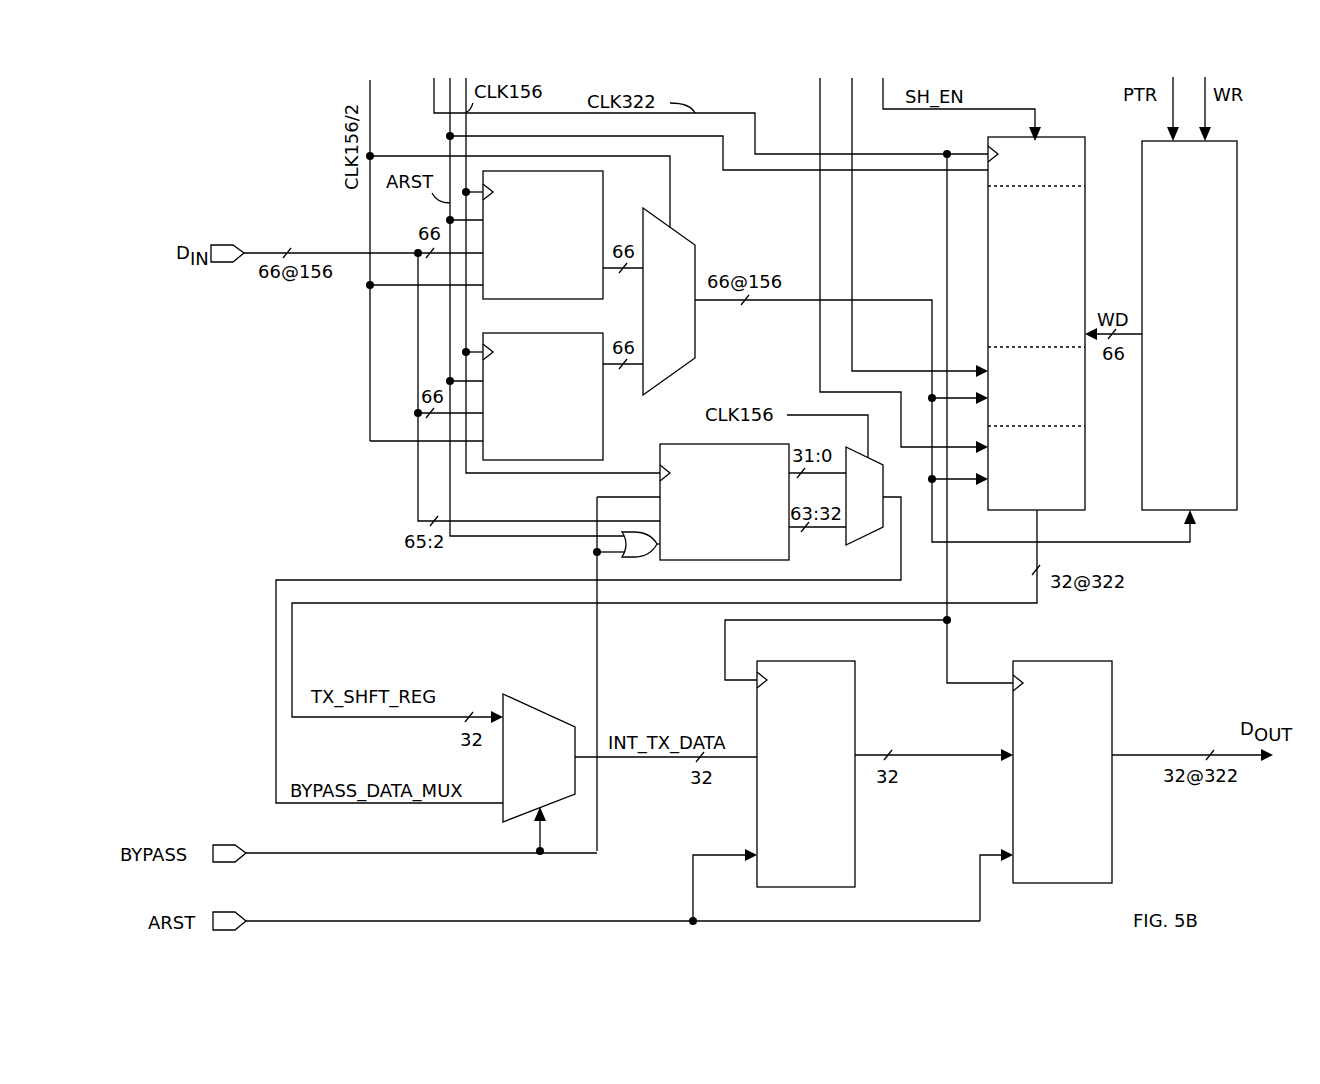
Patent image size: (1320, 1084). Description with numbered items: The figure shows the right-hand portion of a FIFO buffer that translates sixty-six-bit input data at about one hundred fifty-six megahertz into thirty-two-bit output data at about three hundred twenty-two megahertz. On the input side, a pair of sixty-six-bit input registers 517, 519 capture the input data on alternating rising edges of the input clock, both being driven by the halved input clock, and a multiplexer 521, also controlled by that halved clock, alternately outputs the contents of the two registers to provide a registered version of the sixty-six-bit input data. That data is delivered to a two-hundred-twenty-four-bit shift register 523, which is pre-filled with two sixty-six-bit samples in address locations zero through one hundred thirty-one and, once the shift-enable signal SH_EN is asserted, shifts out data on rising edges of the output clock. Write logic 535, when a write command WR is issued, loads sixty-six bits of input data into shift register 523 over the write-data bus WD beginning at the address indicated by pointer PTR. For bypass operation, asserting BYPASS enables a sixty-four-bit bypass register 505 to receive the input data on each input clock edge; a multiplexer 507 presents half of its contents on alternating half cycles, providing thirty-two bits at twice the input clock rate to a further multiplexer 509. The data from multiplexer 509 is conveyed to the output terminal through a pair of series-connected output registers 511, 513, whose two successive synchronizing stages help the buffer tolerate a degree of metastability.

The bypass register 505 is at (724, 502).
The multiplexer 507 is at (868, 542).
The multiplexer 509 is at (539, 758).
The output register 511 is at (806, 774).
The output register 513 is at (1062, 772).
The input register 517 is at (543, 235).
The input register 519 is at (543, 396).
The multiplexer 521 is at (669, 301).
The shift register 523 is at (1036, 323).
The write logic 535 is at (1189, 325).